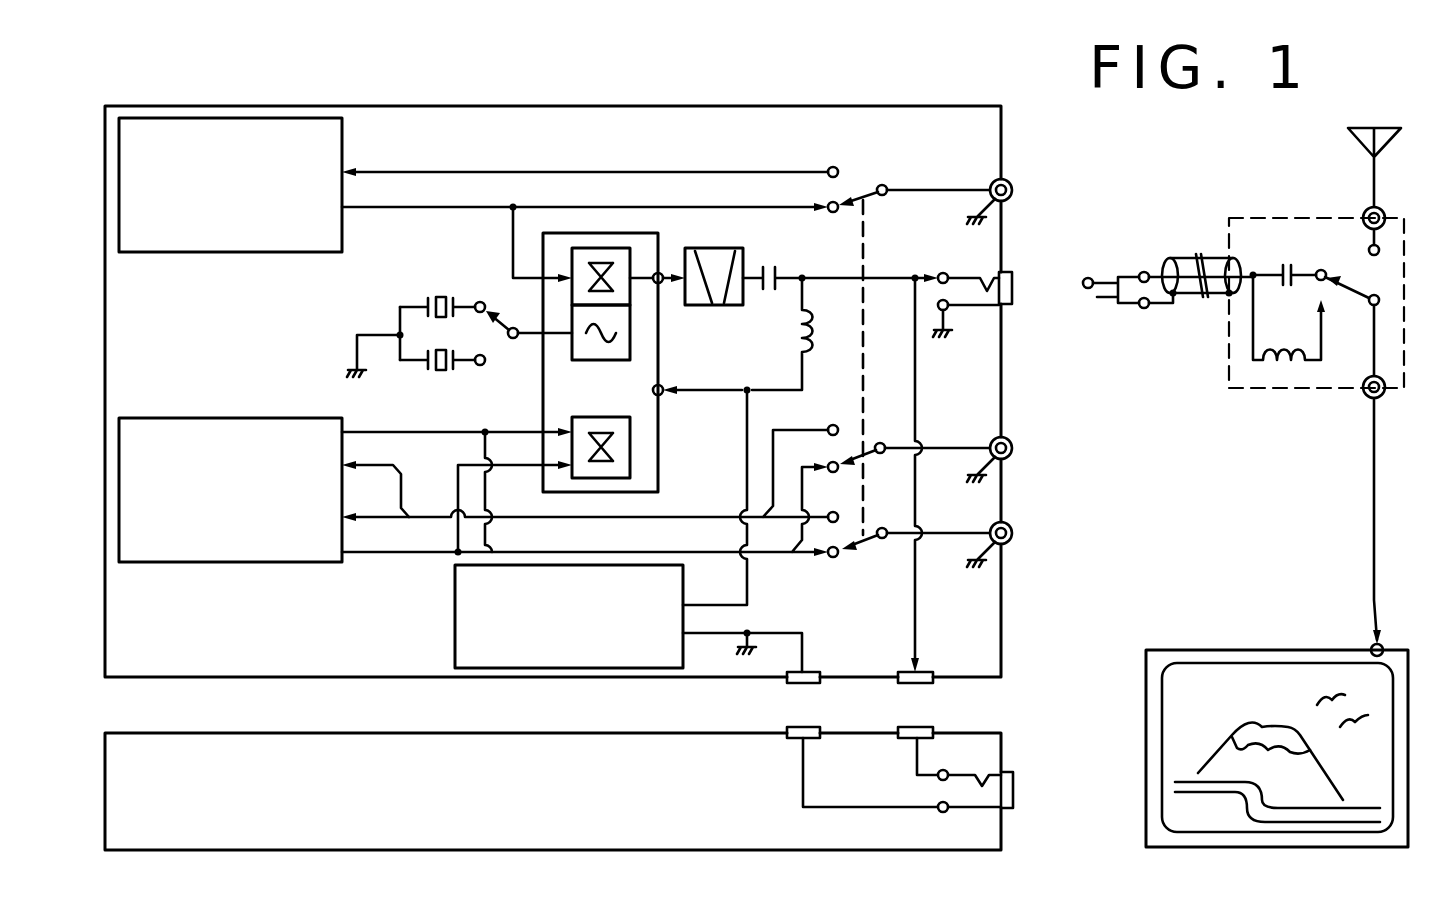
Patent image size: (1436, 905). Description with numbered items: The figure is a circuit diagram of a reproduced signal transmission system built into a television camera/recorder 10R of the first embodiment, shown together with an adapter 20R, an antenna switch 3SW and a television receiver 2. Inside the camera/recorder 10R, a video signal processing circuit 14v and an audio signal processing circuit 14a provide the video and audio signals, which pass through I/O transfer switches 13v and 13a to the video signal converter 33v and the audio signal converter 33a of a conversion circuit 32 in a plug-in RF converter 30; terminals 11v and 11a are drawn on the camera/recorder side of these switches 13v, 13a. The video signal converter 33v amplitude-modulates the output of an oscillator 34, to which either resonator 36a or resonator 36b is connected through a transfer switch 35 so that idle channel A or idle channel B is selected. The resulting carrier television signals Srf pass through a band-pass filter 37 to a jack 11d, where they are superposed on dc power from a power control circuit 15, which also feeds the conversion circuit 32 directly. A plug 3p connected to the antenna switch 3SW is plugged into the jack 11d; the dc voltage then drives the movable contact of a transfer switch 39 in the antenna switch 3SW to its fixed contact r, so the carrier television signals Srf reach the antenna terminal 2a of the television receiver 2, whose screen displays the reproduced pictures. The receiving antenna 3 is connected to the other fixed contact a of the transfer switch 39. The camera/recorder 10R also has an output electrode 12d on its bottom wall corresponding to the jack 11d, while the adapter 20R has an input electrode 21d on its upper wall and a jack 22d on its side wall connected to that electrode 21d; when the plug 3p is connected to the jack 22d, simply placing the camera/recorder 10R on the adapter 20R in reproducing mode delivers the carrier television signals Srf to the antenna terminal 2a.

The television camera/recorder 10R is at (380, 638).
The adapter 20R is at (385, 811).
The video signal processing circuit 14v is at (283, 253).
The audio signal processing circuit 14a is at (290, 565).
The power control circuit 15 is at (455, 592).
The plug-in RF converter 30 is at (720, 358).
The conversion circuit 32 is at (658, 428).
The video signal converter 33v is at (630, 262).
The audio signal converter 33a is at (630, 462).
The oscillator 34 is at (607, 361).
The transfer switch 35 is at (502, 348).
The resonator 36a is at (428, 302).
The resonator 36b is at (428, 366).
The band-pass filter 37 is at (737, 305).
The carrier television signals Srf is at (913, 272).
The I/O transfer switch 13v is at (858, 172).
The I/O transfer switch 13a is at (883, 453).
The video input terminal 11v is at (1012, 188).
The audio input terminals 11a is at (1023, 437).
The jack 11d is at (982, 312).
The output electrode 12d is at (905, 684).
The input electrode 21d is at (903, 740).
The jack 22d is at (1016, 790).
The receiving antenna 3 is at (1350, 133).
The antenna switch 3SW is at (1255, 392).
The transfer switch 39 is at (1345, 258).
The plug 3p is at (1135, 308).
The television receiver 2 is at (1200, 648).
The antenna terminal 2a is at (1370, 643).